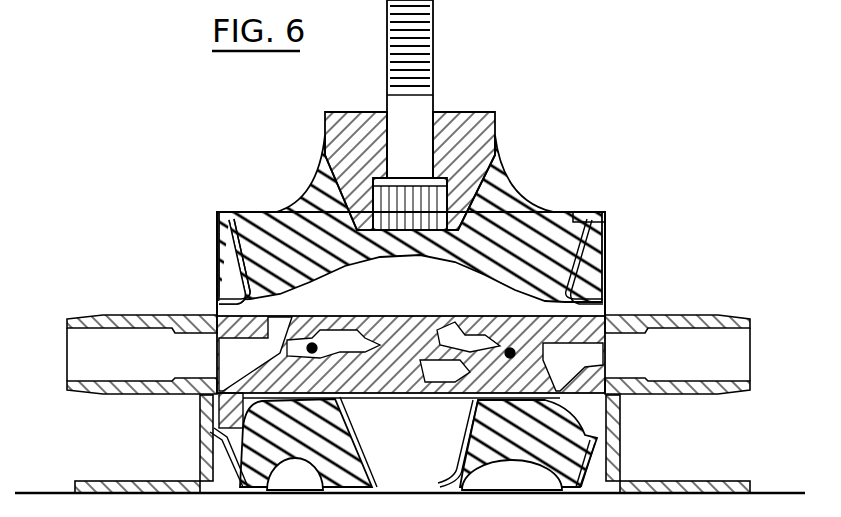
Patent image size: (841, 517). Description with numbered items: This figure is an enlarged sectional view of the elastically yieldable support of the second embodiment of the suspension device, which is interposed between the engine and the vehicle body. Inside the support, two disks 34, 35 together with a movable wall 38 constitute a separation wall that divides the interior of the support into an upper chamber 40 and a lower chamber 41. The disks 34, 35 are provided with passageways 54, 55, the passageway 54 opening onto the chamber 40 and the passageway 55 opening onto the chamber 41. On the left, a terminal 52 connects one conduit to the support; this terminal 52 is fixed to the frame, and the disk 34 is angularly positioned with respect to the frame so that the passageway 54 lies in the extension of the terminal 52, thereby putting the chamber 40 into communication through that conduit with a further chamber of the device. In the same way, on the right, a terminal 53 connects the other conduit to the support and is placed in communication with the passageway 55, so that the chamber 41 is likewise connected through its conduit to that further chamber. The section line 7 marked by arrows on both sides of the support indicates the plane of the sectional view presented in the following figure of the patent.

The disk 34 is at (604, 276).
The disk 35 is at (613, 413).
The movable wall 38 is at (443, 380).
The chamber 40 is at (392, 292).
The chamber 41 is at (412, 438).
The terminal 52 is at (84, 315).
The terminal 53 is at (723, 315).
The passageway 54 is at (264, 356).
The passageway 55 is at (601, 356).
The section line 7- 7 is at (138, 310).